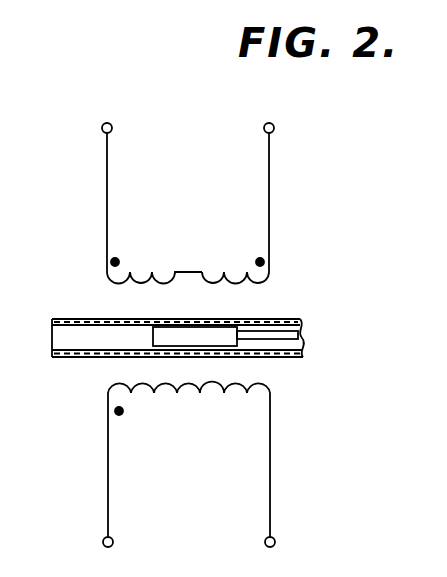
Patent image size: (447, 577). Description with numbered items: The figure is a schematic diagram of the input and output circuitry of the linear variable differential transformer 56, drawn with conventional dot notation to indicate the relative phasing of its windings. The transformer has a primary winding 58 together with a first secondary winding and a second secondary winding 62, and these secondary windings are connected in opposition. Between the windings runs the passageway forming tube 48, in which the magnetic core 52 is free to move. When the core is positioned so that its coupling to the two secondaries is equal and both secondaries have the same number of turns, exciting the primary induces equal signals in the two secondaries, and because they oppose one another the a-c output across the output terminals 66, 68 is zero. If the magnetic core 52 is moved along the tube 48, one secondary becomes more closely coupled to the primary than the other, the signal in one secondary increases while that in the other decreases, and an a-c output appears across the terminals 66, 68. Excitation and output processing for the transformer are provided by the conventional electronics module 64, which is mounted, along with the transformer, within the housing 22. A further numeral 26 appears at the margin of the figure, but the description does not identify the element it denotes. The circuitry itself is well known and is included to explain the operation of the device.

The housing 22 is at (6, 165).
The lead 26 is at (0, 304).
The passageway forming tube 48 is at (303, 358).
The magnetic core 52 is at (213, 333).
The linear variable differential transformer 56 is at (214, 335).
The primary winding 58 is at (195, 394).
The second secondary winding 62 is at (213, 280).
The electronics module 64 is at (139, 281).
The output terminal 66 is at (112, 126).
The output terminal 68 is at (275, 126).